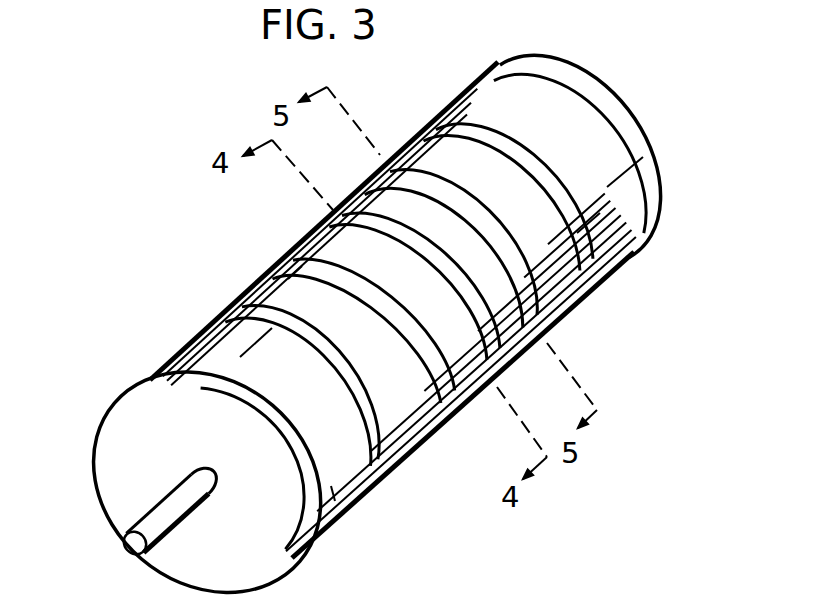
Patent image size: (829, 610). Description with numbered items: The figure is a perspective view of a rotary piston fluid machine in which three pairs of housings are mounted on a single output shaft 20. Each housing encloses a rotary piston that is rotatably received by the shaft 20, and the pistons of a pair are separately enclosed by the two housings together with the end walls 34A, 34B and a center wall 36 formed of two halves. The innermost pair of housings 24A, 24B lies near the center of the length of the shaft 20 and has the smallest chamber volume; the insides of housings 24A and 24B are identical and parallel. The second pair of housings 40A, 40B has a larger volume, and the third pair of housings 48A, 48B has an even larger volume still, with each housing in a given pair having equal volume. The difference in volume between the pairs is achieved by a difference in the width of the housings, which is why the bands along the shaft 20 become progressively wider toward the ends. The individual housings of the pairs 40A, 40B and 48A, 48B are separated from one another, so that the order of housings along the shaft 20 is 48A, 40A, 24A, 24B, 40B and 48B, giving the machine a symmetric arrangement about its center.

The shaft 20 is at (123, 543).
The end wall 34A is at (277, 262).
The end wall 34B is at (412, 177).
The center wall 36 is at (380, 223).
The housing 24A is at (457, 404).
The housing 24B is at (503, 363).
The housing 40A is at (397, 468).
The housing 40B is at (550, 335).
The housing 48A is at (343, 518).
The housing 48B is at (622, 263).